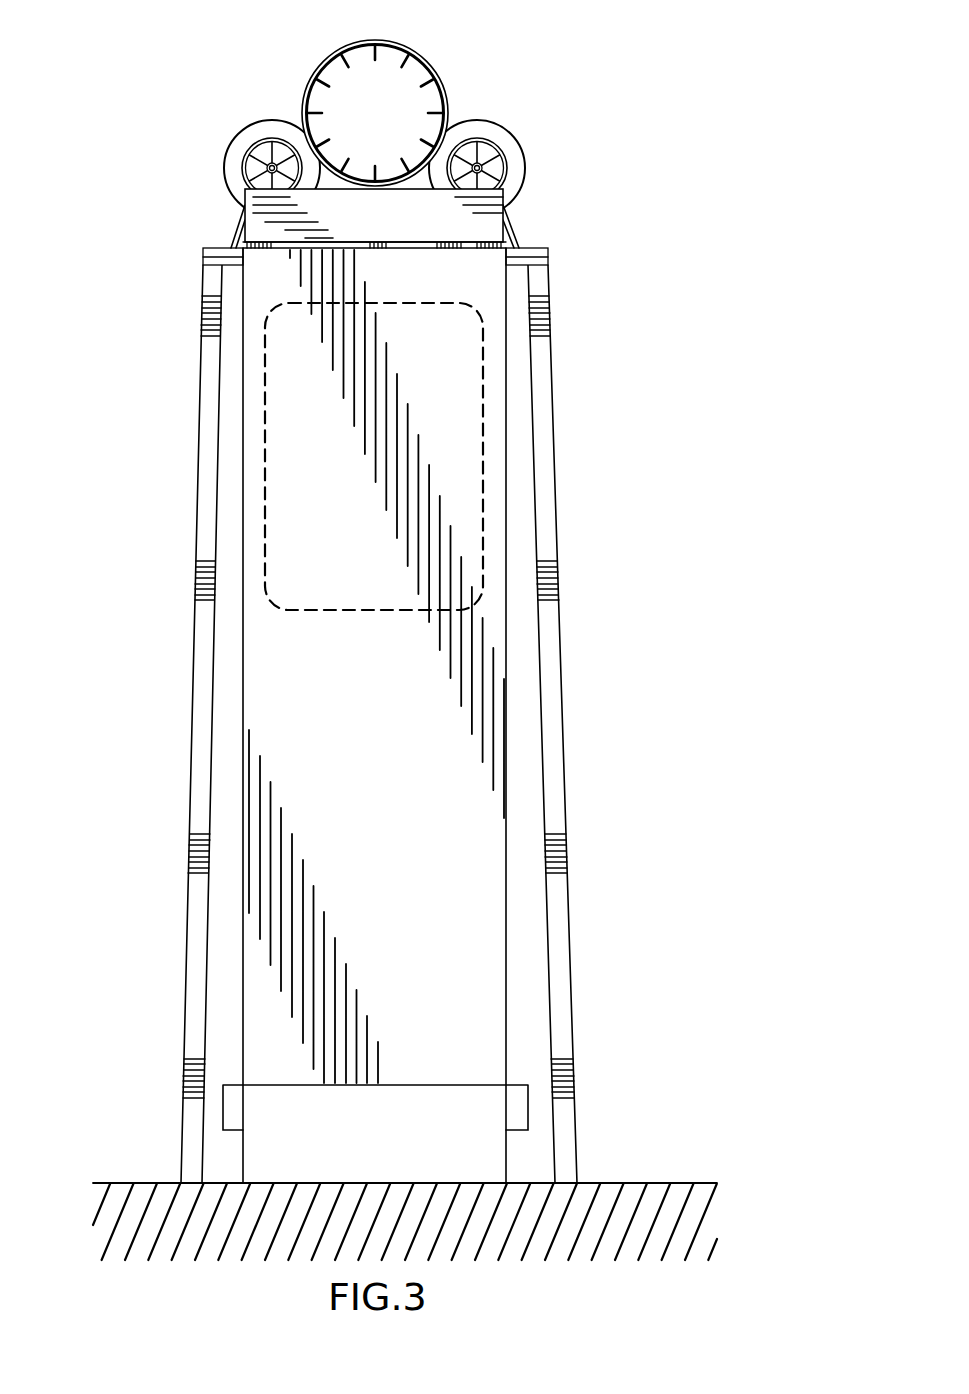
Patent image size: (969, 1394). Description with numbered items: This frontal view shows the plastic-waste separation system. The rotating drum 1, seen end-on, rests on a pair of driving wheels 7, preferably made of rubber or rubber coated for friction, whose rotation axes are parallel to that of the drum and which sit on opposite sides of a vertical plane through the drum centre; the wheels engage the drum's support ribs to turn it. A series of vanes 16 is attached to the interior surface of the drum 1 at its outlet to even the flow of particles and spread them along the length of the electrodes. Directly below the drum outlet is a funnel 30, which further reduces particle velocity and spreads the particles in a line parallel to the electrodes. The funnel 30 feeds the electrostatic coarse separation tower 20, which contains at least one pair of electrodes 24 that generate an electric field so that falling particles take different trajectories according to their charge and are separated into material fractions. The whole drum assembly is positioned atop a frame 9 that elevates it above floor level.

The drum 1 is at (443, 92).
The vanes 16 is at (384, 61).
The driving wheel 7 is at (240, 147).
The funnel 30 is at (480, 222).
The frame 9 is at (184, 540).
The electrostatic coarse separation tower 20 is at (388, 830).
The electrodes 24 is at (448, 447).